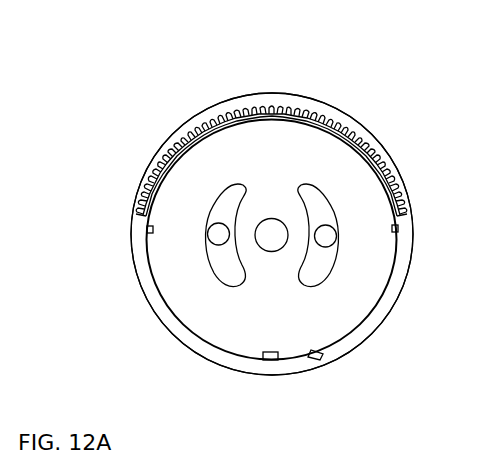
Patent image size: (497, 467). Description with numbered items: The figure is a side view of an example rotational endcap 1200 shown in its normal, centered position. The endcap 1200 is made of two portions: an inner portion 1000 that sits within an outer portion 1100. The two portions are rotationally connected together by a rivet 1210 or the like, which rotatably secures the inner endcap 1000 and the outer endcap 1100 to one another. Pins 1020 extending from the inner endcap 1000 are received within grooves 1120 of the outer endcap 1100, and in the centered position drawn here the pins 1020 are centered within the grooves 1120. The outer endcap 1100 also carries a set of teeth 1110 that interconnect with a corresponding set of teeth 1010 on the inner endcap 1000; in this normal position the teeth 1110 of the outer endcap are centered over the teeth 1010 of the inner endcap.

The rotational endcap 1200 is at (135, 111).
The outer portion 1100 is at (129, 226).
The inner portion 1000 is at (322, 353).
The teeth of the outer endcap 1110 is at (266, 104).
The teeth of the inner endcap 1010 is at (394, 227).
The rivet 1210 is at (268, 235).
The grooves 1120 is at (230, 280).
The pins 1020 is at (332, 236).